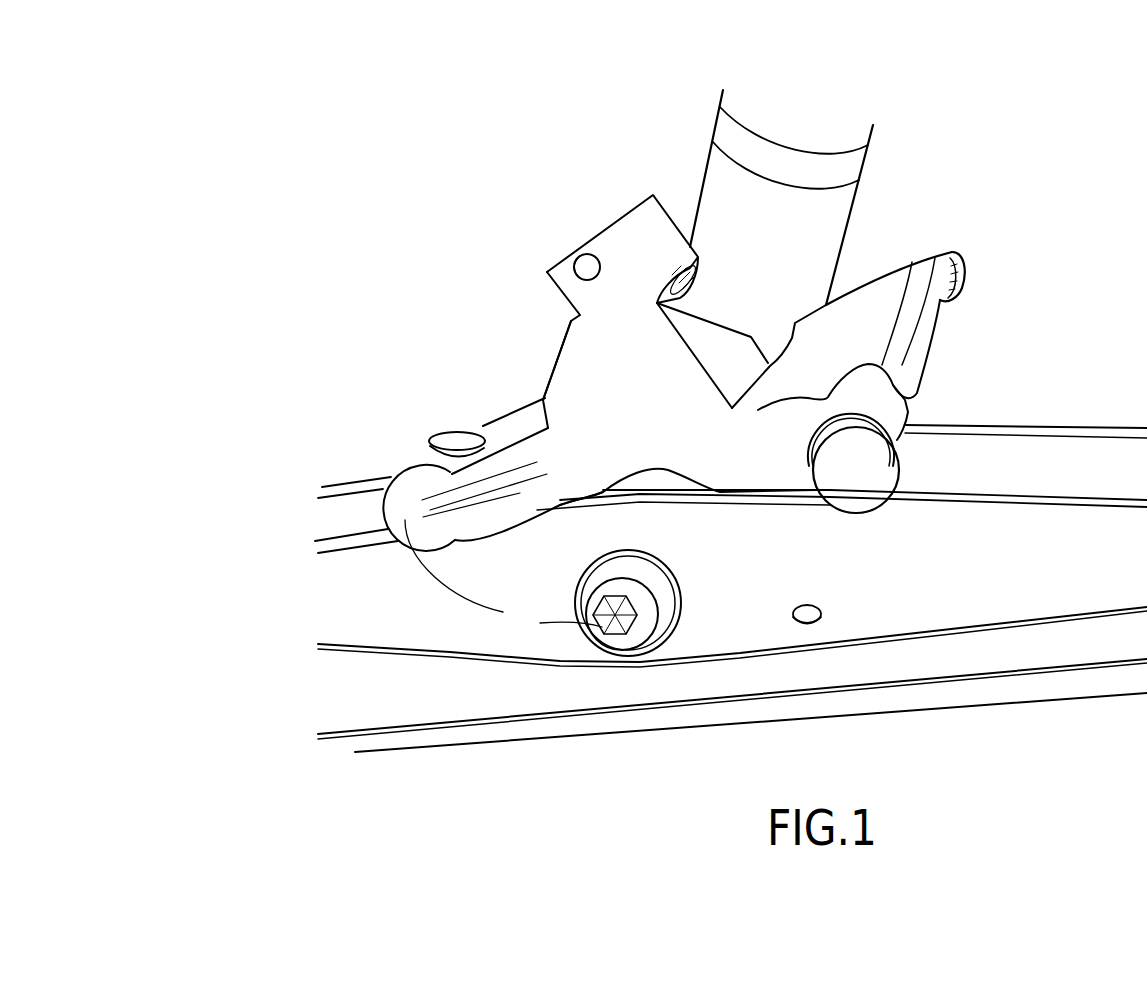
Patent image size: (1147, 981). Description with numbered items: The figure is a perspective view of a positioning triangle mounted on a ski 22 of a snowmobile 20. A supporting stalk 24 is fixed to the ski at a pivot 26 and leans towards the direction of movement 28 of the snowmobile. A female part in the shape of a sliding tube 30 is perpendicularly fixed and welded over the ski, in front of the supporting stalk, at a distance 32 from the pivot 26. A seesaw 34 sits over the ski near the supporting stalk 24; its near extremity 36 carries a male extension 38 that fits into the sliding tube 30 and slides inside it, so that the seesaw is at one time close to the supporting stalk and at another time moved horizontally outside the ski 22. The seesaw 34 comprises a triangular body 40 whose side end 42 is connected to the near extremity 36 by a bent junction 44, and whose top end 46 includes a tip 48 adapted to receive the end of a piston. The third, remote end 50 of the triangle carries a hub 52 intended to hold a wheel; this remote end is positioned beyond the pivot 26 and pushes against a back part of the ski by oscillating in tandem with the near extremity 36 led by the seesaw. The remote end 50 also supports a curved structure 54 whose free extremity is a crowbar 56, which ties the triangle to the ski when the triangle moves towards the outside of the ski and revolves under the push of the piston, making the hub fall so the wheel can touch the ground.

The snowmobile 20 is at (337, 212).
The ski 22 is at (970, 585).
The supporting stalk 24 is at (828, 213).
The pivot 26 is at (610, 622).
The direction of movement 28 is at (268, 344).
The sliding tube 30 is at (508, 427).
The distance 32 is at (503, 575).
The seesaw 34 is at (555, 372).
The near extremity 36 is at (380, 513).
The male extension 38 is at (448, 458).
The triangular body 40 is at (631, 113).
The side end 42 is at (576, 463).
The bent junction 44 is at (477, 507).
The top end 46 is at (638, 198).
The tip 48 is at (583, 230).
The remote end 50 is at (897, 438).
The hub 52 is at (863, 485).
The curved structure 54 is at (867, 338).
The crowbar 56 is at (943, 285).